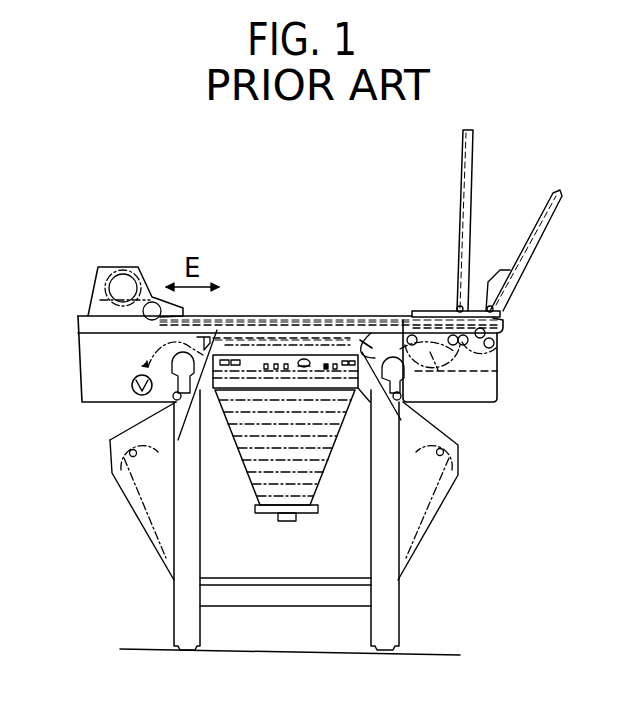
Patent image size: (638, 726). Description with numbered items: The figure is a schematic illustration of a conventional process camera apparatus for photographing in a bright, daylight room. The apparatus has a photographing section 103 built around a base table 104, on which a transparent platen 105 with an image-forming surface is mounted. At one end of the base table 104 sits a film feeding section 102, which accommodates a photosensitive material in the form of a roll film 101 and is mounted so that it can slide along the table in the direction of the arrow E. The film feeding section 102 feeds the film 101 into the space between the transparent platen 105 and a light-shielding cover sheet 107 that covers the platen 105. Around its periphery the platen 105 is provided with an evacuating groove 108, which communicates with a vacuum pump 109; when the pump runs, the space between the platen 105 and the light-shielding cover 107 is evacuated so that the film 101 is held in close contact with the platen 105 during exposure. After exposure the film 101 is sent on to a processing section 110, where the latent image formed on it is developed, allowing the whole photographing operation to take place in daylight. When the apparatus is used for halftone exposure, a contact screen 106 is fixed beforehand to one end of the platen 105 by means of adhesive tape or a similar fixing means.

The film 101 is at (110, 290).
The film feeding section 102 is at (103, 268).
The photographing section 103 is at (217, 402).
The base table 104 is at (402, 313).
The transparent platen 105 is at (347, 337).
The contact screen 106 is at (307, 331).
The light-shielding cover sheet 107 is at (234, 321).
The evacuating groove 108 is at (179, 401).
The vacuum pump 109 is at (134, 377).
The processing section 110 is at (450, 363).